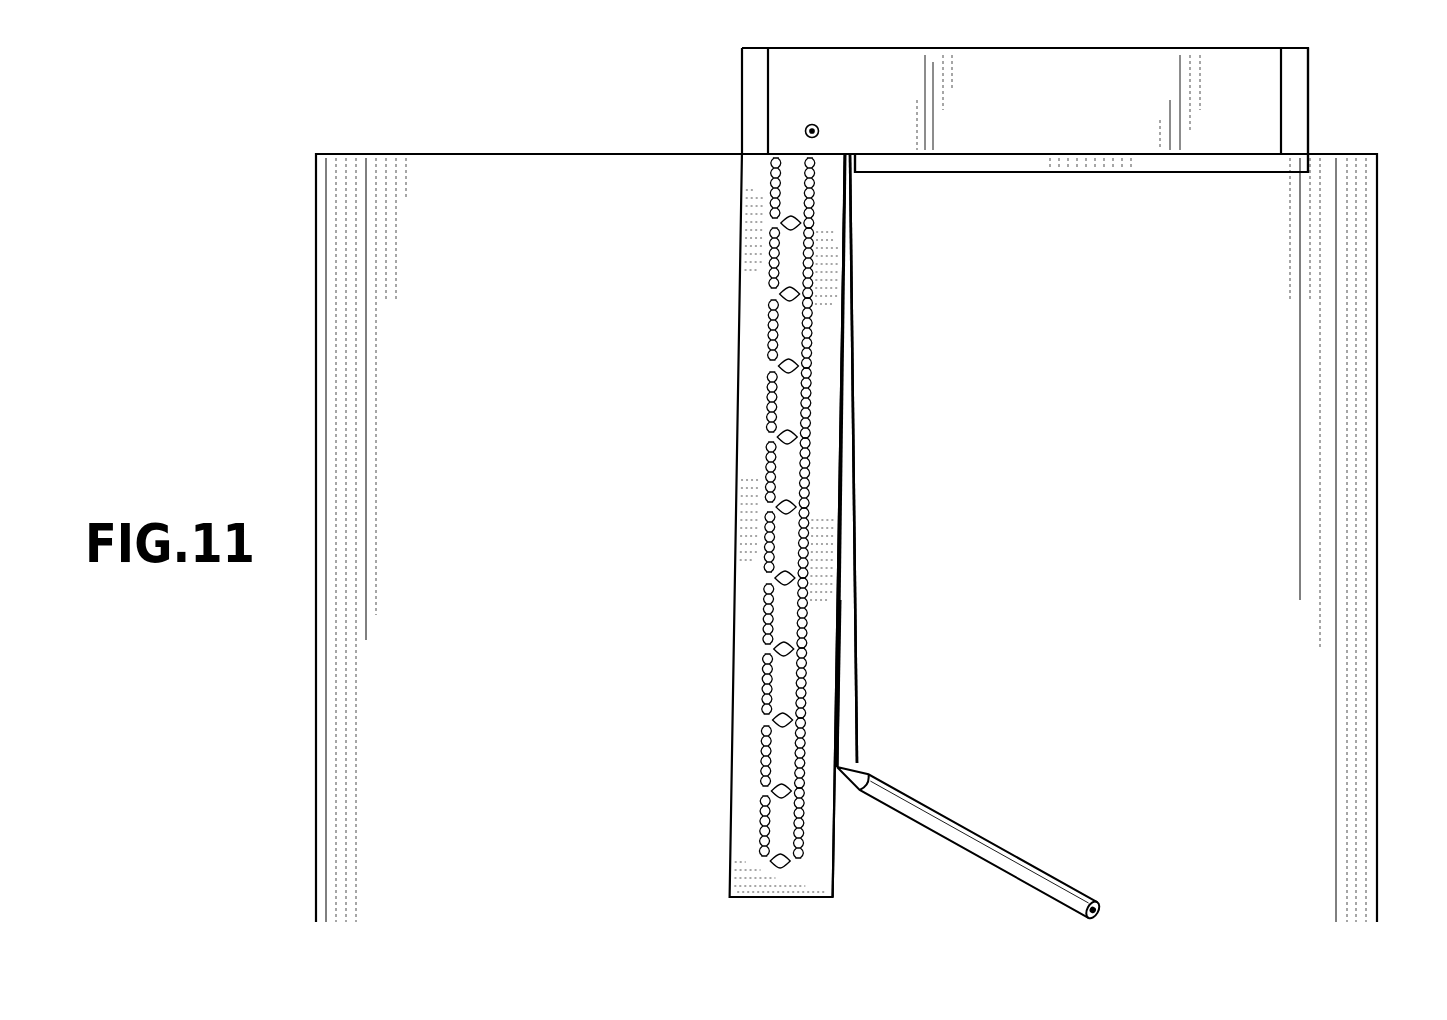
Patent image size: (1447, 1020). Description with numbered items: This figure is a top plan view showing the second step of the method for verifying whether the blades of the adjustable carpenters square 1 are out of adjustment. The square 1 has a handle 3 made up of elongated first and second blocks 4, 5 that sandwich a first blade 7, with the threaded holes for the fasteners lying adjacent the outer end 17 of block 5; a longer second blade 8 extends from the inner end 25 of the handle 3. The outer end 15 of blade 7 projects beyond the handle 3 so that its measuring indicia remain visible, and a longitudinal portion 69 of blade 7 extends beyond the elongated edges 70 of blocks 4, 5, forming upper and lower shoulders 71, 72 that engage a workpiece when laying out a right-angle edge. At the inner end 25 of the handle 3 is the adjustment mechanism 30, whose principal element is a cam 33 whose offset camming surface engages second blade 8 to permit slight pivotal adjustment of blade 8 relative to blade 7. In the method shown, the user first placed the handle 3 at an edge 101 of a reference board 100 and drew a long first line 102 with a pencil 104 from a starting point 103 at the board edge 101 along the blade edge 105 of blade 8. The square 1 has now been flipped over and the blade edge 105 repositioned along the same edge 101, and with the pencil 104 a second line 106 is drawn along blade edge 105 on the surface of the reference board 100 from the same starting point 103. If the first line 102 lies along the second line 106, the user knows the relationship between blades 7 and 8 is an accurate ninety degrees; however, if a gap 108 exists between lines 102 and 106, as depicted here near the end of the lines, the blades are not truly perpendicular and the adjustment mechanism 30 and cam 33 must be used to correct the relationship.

The adjustable carpenters square 1 is at (1014, 125).
The handle 3 is at (1082, 182).
The first block 4 is at (1148, 40).
The second block 5 is at (1357, 101).
The outer end of handle block 5 17 is at (1276, 90).
The first blade 7 is at (1182, 180).
The second blade 8 is at (736, 355).
The outer end of blade 7 15 is at (1314, 120).
The inner end of handle 25 is at (766, 103).
The adjustment mechanism 30 is at (743, 74).
The cam 33 is at (808, 120).
The longitudinal portion of blade 7 69 is at (995, 160).
The elongated edges of blocks 70 is at (1081, 201).
The upper shoulder 71 is at (1032, 154).
The lower shoulder 72 is at (920, 154).
The reference board 100 is at (1128, 531).
The edge of reference board 101 is at (553, 153).
The first line 102 is at (857, 650).
The starting point 103 is at (847, 153).
The pencil 104 is at (987, 842).
The blade edge 105 is at (836, 870).
The second line 106 is at (841, 703).
The gap 108 is at (848, 745).